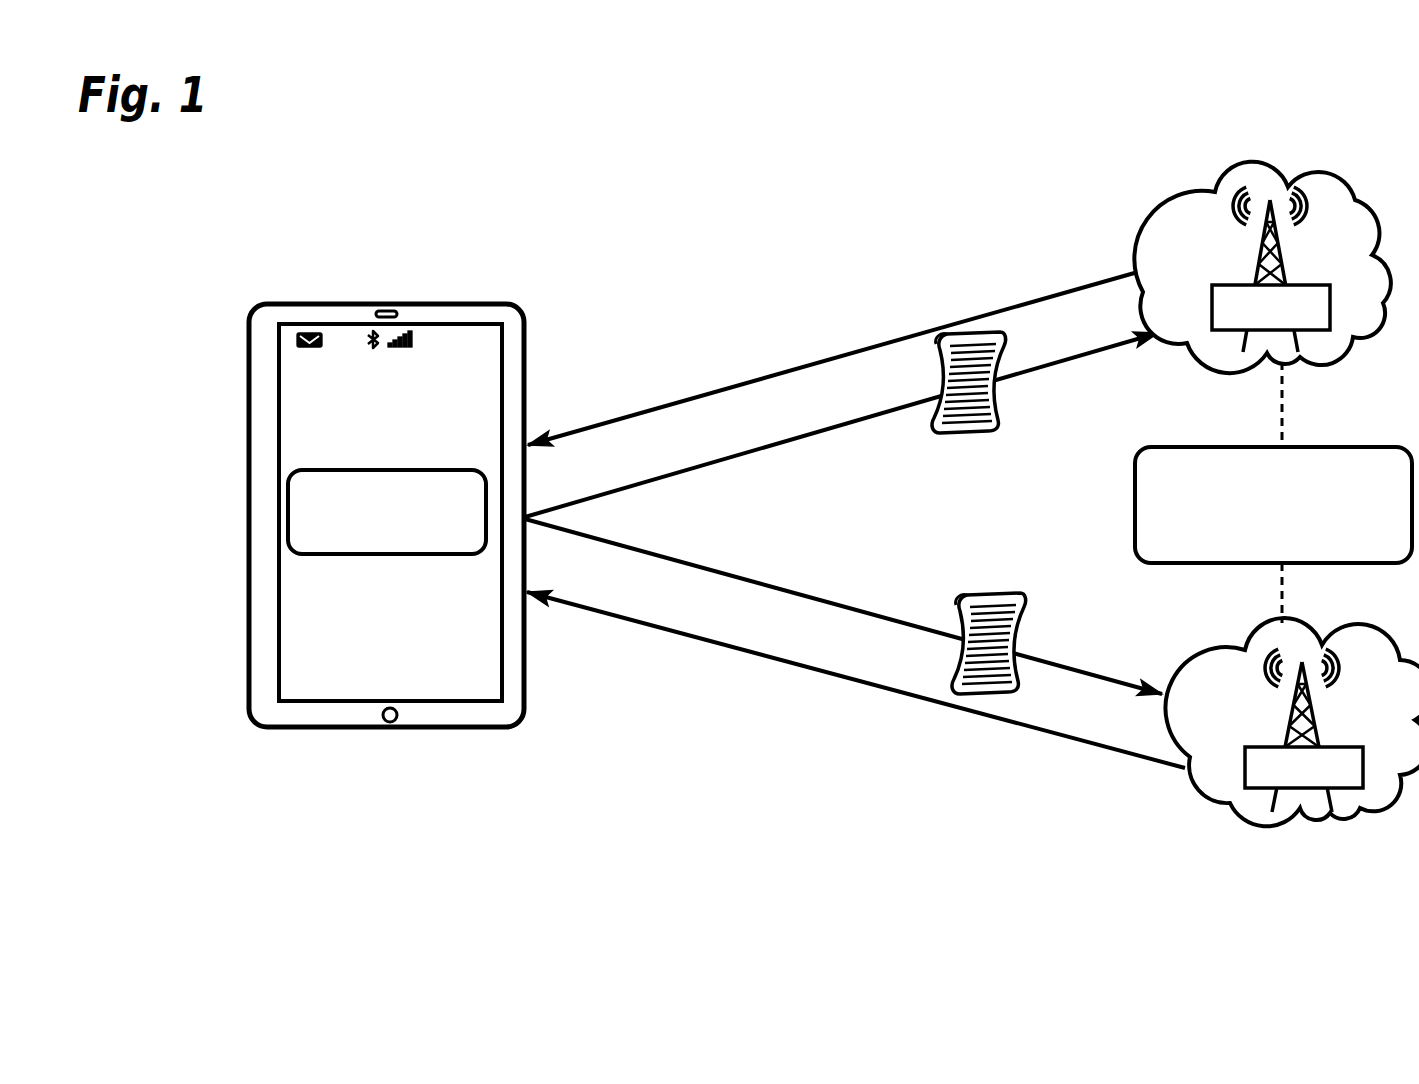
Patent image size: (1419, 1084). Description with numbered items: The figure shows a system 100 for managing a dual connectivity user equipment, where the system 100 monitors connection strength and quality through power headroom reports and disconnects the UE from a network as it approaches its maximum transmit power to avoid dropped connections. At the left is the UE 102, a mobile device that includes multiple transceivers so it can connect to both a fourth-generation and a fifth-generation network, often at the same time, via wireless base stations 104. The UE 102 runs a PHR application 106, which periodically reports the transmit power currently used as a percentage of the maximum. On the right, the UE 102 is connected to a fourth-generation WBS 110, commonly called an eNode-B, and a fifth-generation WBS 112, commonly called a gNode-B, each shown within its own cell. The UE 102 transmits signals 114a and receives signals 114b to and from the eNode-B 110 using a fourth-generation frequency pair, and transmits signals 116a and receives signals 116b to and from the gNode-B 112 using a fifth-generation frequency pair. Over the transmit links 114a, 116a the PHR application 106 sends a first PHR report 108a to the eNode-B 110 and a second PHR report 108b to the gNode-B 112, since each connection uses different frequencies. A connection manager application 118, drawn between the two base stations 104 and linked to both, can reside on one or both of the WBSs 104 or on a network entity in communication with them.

The system 100 is at (692, 188).
The user equipment (UE) 102 is at (410, 303).
The wireless base station (WBS) 104 is at (1283, 145).
The PHR application 106 is at (387, 512).
The first PHR report 108a is at (990, 413).
The second PHR report 108b is at (1023, 612).
The 4G WBS (eNode-B) 110 is at (1212, 286).
The 5G WBS (gNode-B) 112 is at (1245, 748).
The transmit (Tx) signals to eNode-B 114a is at (782, 443).
The receive (Rx) signals from eNode-B 114b is at (760, 375).
The transmit (Tx) signals to gNode-B 116a is at (720, 572).
The receive (Rx) signals from gNode-B 116b is at (702, 635).
The connection manager application 118 is at (1273, 492).